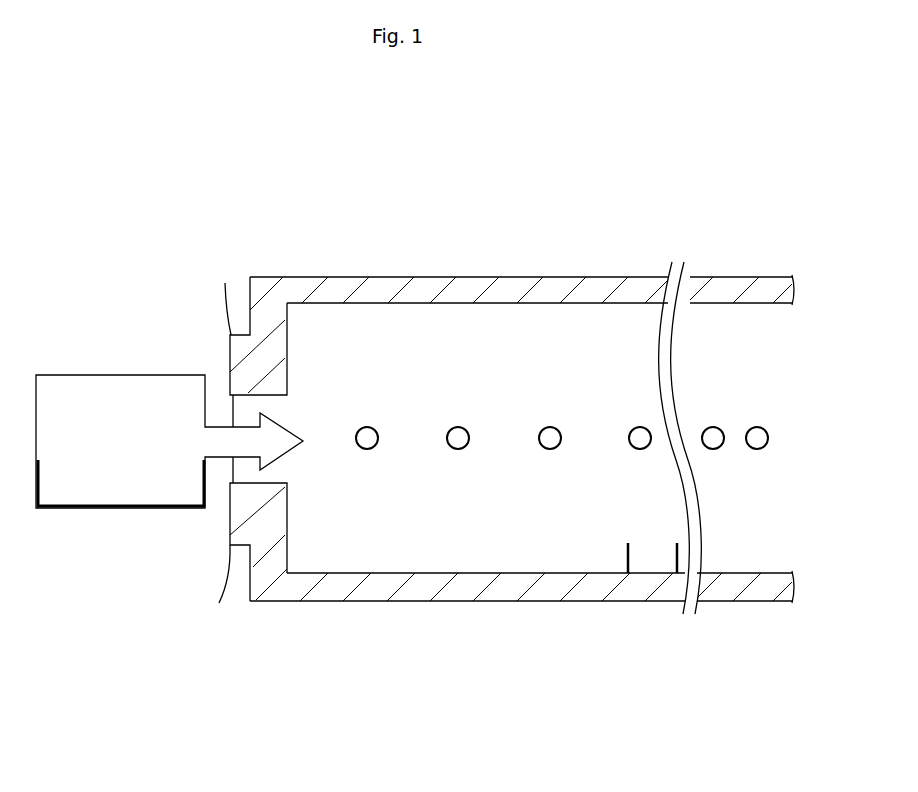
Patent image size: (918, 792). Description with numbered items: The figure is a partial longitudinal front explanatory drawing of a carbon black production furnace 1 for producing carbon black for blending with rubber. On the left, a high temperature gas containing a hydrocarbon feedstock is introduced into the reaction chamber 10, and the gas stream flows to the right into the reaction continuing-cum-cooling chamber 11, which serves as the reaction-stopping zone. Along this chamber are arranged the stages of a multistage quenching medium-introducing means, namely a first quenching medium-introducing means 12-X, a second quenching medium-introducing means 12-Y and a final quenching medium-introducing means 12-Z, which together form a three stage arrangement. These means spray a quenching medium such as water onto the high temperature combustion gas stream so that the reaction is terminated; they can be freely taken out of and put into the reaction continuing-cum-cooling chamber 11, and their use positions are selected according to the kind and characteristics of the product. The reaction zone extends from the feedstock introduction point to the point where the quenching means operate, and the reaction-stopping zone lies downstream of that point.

The carbon black production furnace 1 is at (547, 230).
The reaction chamber 10 is at (360, 540).
The reaction continuing-cum-cooling chamber 11 is at (634, 540).
The first quenching medium-introducing means 12-X is at (354, 421).
The second quenching medium-introducing means 12-Y is at (533, 421).
The final quenching medium-introducing means 12-Z is at (741, 421).